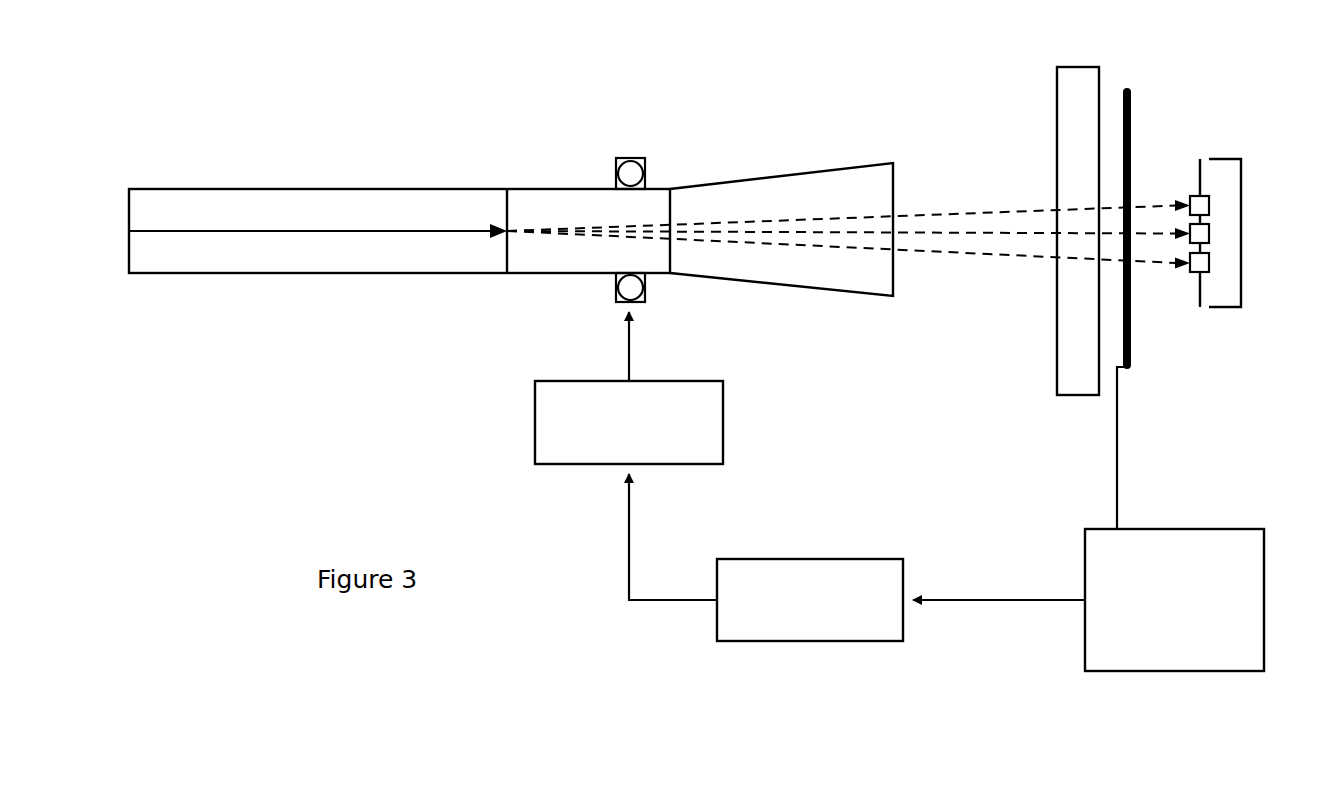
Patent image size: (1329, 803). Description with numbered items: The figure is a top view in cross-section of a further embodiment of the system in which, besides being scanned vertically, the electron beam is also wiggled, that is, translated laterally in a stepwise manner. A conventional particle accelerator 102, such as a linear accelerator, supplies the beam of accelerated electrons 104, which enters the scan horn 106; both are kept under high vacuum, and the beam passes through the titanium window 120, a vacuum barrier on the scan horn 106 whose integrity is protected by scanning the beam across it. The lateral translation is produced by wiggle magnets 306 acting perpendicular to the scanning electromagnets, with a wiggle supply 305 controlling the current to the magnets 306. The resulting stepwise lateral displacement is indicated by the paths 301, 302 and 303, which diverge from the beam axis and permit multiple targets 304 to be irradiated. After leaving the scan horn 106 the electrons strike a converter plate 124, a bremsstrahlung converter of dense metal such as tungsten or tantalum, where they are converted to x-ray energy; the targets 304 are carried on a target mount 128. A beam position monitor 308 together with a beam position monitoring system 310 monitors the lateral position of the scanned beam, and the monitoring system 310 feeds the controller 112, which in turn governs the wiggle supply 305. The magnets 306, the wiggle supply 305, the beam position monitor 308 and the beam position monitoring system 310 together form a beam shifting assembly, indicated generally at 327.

The particle accelerator 102 is at (348, 189).
The electron beam 104 is at (392, 231).
The scan horn 106 is at (729, 115).
The controller 112 is at (766, 557).
The titanium window 120 is at (897, 257).
The converter plate 124 is at (1070, 67).
The target mount 128 is at (1223, 307).
The path 301 is at (917, 212).
The path 302 is at (936, 246).
The path 303 is at (1000, 256).
The targets 304 is at (1190, 263).
The wiggle supply 305 is at (577, 381).
The wiggle magnets 306 is at (615, 291).
The beam position monitor 308 is at (1133, 320).
The beam position monitoring system 310 is at (1088, 600).
The beam wiggling arrangement 327 is at (637, 667).